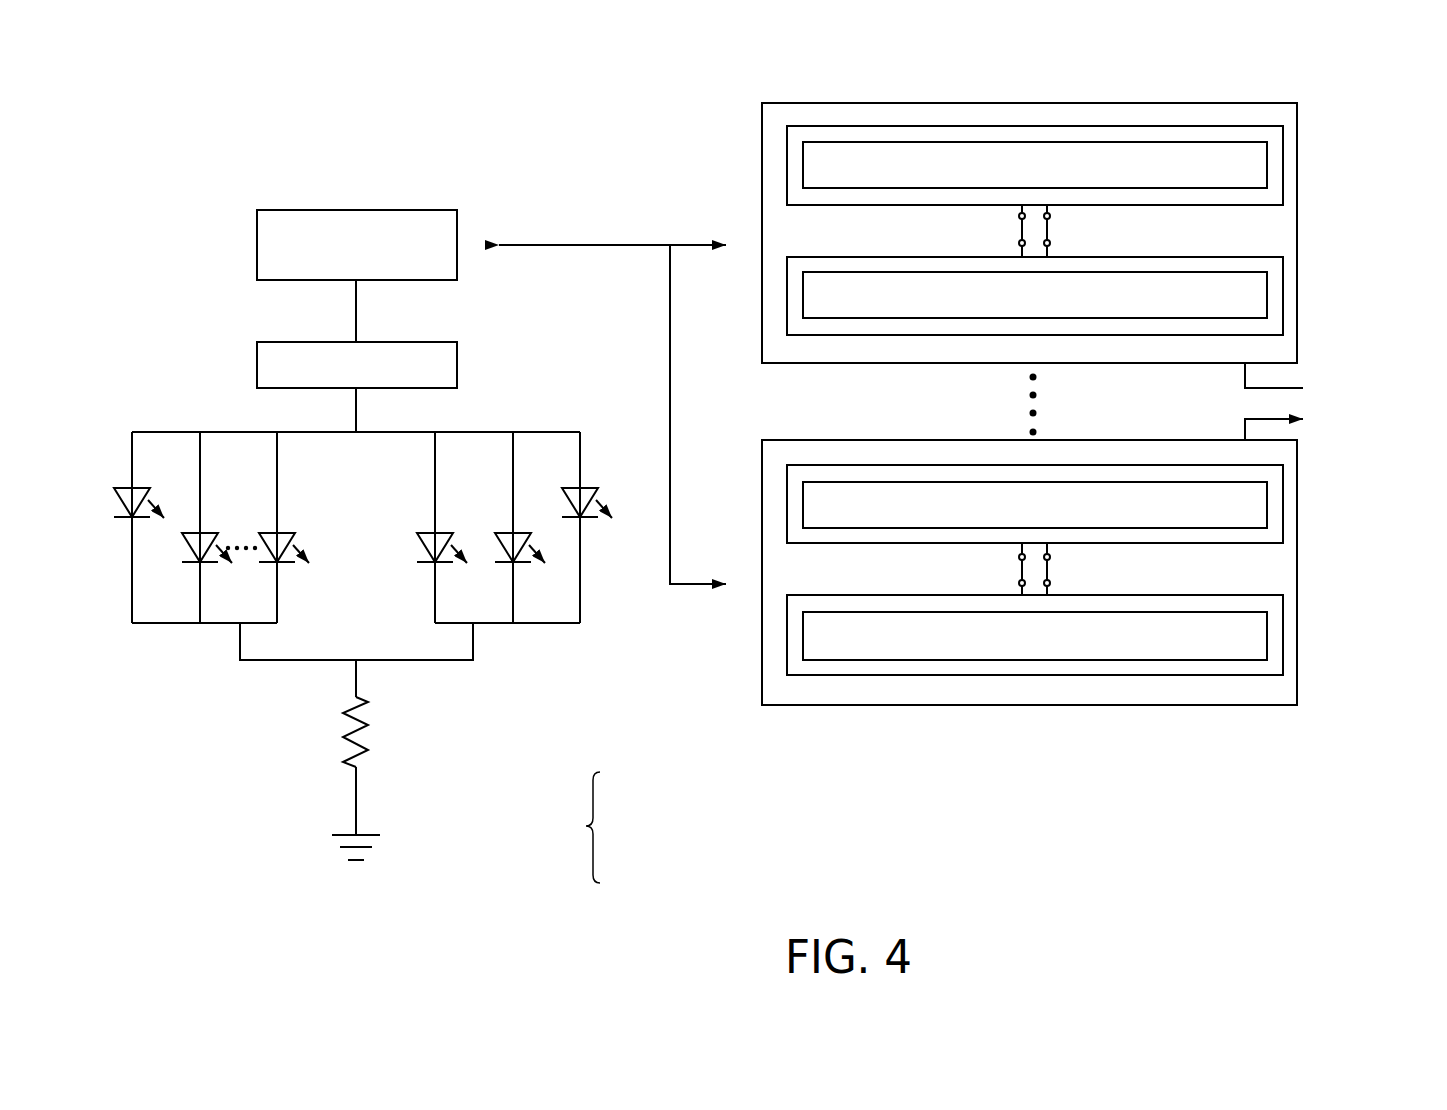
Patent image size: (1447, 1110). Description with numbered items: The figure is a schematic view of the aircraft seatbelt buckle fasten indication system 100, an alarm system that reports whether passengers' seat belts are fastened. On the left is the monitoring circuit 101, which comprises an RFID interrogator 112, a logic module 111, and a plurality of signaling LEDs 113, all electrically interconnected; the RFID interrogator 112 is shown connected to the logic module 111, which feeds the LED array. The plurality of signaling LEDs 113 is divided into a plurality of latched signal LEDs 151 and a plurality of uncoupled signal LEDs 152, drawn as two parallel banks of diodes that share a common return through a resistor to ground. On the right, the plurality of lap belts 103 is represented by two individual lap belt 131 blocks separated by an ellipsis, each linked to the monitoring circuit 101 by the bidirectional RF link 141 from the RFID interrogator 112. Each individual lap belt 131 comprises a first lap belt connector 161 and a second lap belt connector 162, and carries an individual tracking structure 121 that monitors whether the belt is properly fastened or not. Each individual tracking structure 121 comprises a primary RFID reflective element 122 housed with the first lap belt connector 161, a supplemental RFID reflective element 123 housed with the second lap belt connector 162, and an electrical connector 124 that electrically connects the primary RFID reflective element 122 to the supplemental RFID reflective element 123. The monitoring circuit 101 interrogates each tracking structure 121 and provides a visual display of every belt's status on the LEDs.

The aircraft seatbelt buckle fasten indication system 100 is at (258, 122).
The monitoring circuit 101 is at (235, 190).
The plurality of lap belts 103 is at (1362, 367).
The logic module 111 is at (457, 350).
The RFID interrogator 112 is at (427, 218).
The plurality of signaling LEDs 113 is at (408, 510).
The individual tracking structure 121 is at (590, 826).
The primary RFID reflective element 122 is at (812, 167).
The supplemental RFID reflective element 123 is at (812, 295).
The electrical connector 124 is at (1020, 230).
The individual lap belt 131 is at (1061, 404).
The RF communication link 141 is at (620, 243).
The plurality of latched signal LEDs 151 is at (130, 578).
The plurality of uncoupled signal LEDs 152 is at (580, 565).
The first lap belt connector 161 is at (1218, 133).
The second lap belt connector 162 is at (1277, 268).